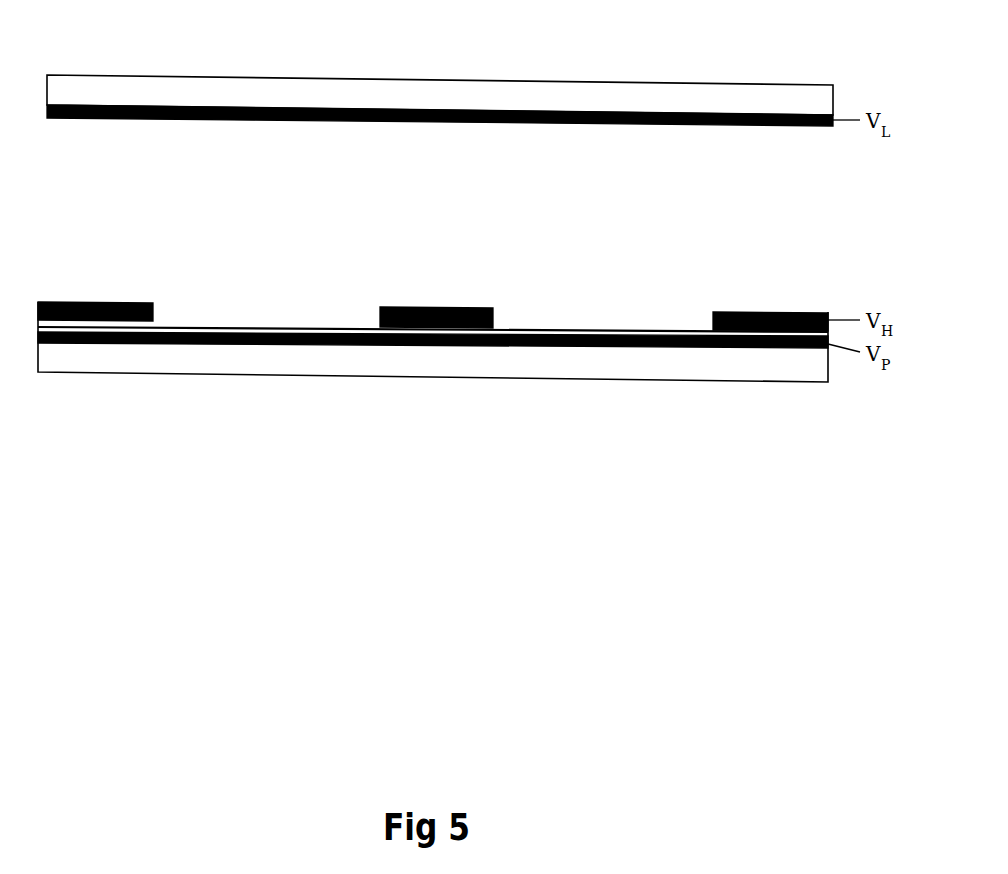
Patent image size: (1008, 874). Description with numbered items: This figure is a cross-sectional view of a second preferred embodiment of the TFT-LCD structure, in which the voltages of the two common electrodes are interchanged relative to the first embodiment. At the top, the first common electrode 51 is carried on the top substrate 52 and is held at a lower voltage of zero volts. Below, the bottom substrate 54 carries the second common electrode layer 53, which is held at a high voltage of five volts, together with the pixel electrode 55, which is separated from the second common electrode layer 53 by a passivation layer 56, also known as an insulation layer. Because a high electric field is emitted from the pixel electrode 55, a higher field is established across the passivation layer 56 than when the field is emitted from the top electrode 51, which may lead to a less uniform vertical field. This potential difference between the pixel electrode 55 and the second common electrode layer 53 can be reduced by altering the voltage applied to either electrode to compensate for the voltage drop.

The first common electrode 51 is at (272, 120).
The top substrate 52 is at (113, 76).
The second common electrode layer 53 is at (105, 302).
The bottom substrate 54 is at (112, 352).
The pixel electrode 55 is at (563, 345).
The passivation layer 56 is at (614, 327).